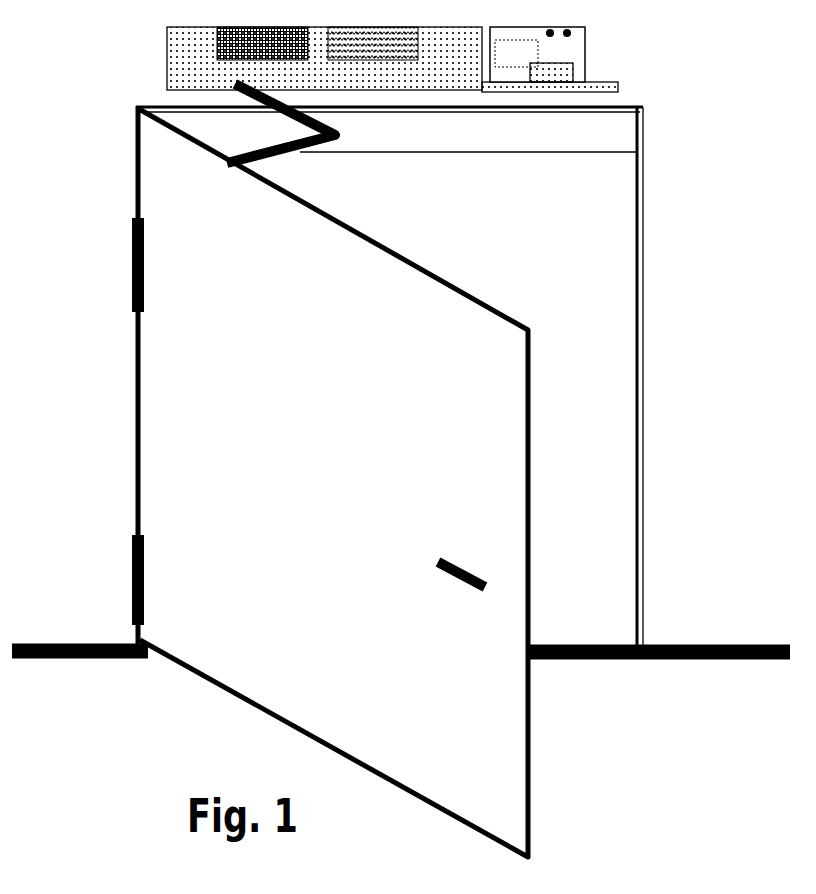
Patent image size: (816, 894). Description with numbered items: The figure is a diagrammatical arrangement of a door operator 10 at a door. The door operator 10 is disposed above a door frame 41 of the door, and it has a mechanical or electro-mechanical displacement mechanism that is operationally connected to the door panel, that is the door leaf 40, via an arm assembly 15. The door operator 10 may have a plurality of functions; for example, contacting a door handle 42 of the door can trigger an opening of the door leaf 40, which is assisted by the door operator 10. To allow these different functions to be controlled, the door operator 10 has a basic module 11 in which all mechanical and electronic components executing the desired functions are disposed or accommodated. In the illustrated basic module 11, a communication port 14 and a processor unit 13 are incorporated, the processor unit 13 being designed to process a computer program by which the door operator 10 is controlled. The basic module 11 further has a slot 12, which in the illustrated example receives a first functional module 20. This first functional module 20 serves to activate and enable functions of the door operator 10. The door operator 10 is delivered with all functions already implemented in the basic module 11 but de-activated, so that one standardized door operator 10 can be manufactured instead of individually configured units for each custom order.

The door operator 10 is at (381, 88).
The basic module 11 is at (607, 88).
The slot 12 is at (560, 72).
The processor unit 13 is at (218, 59).
The communication port 14 is at (362, 42).
The arm assembly 15 is at (643, 152).
The first functional module 20 is at (584, 55).
The door leaf 40 is at (424, 483).
The door frame 41 is at (645, 288).
The door handle 42 is at (470, 572).